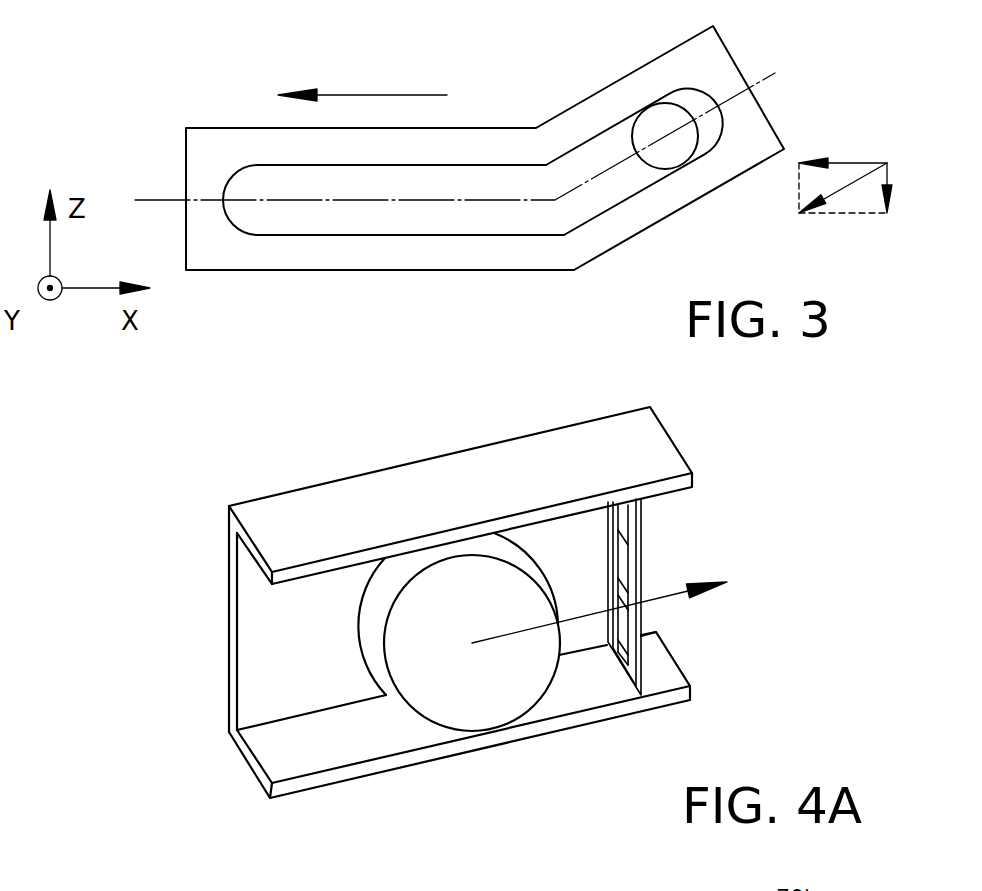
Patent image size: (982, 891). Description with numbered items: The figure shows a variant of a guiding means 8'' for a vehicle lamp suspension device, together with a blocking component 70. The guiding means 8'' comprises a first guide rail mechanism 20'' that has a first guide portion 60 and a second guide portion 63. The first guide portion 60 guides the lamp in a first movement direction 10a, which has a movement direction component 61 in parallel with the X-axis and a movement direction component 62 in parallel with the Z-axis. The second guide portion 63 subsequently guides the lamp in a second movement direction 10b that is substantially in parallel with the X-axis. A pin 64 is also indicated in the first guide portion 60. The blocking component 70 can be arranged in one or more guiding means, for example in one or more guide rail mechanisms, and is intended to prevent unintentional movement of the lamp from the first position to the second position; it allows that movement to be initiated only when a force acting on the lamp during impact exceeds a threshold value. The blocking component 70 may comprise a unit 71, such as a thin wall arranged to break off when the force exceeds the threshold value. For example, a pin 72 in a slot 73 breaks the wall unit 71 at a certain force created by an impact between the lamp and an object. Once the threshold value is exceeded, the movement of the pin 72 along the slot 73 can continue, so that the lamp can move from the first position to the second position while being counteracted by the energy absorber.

In FIG. 3, the guiding means 8'' is at (435, 169).
In FIG. 3, the second movement direction 10b is at (378, 95).
In FIG. 3, the second guide portion 63 is at (267, 183).
In FIG. 3, the first guide portion 60 is at (600, 157).
In FIG. 3, the pin 64 is at (655, 122).
In FIG. 3, the first guide rail mechanism 20'' is at (459, 179).
In FIG. 3, the movement direction component 61 is at (855, 163).
In FIG. 3, the movement direction component 62 is at (890, 192).
In FIG. 3, the first movement direction 10a is at (840, 194).
In FIG. 4A, the blocking component 70 is at (722, 424).
In FIG. 4A, the wall unit 71 is at (643, 613).
In FIG. 4A, the pin 72 is at (487, 665).
In FIG. 4A, the slot 73 is at (343, 735).